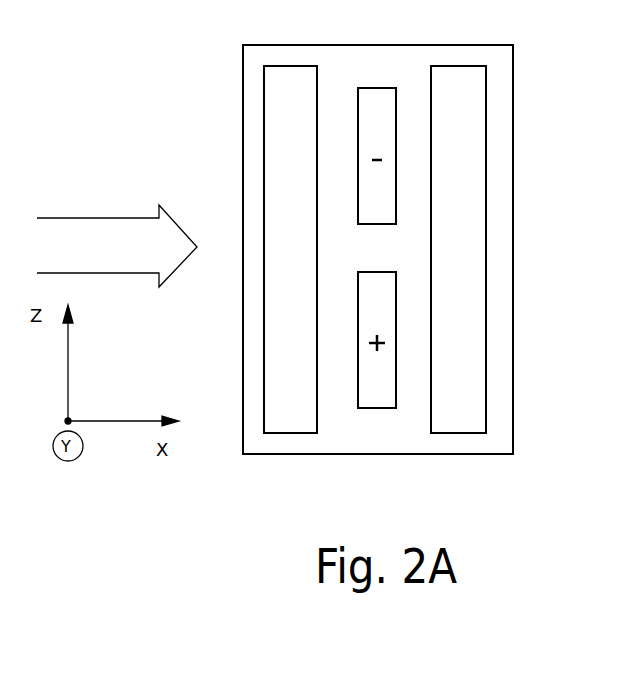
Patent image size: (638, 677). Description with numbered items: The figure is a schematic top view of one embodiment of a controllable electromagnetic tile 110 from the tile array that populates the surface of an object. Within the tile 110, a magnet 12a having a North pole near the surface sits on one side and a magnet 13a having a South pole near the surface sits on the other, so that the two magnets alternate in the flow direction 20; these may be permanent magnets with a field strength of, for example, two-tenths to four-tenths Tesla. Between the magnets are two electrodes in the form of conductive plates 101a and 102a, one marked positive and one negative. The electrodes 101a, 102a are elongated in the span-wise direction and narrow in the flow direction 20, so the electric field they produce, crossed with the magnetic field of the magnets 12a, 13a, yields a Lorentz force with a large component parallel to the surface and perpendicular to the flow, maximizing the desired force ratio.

The controllable electromagnetic tile 110 is at (488, 448).
The magnet 12a is at (287, 72).
The magnet 13a is at (482, 149).
The electrode 102a is at (374, 97).
The electrode 101a is at (378, 408).
The flow direction 20 is at (70, 225).